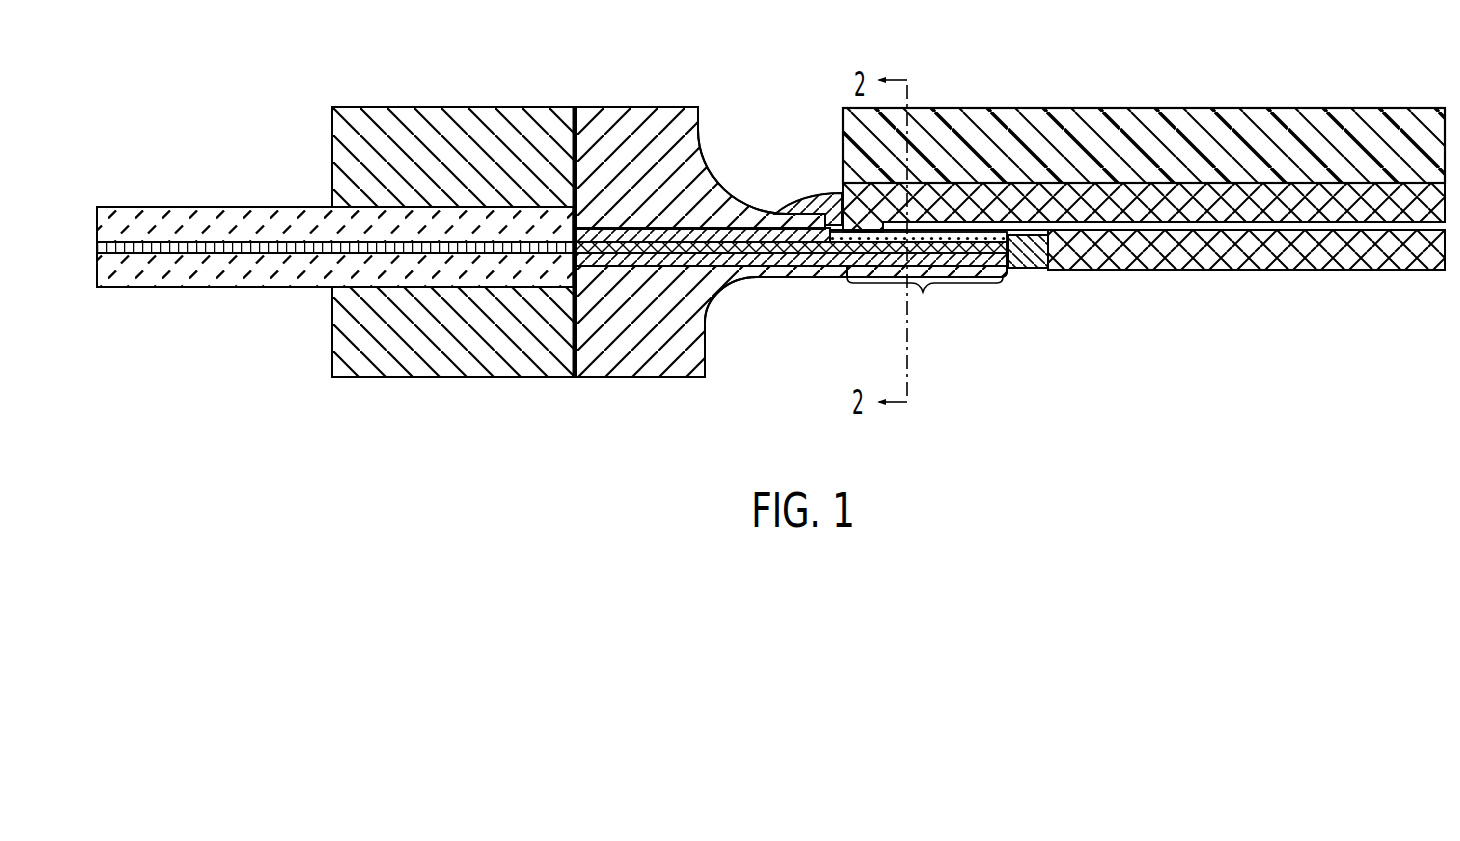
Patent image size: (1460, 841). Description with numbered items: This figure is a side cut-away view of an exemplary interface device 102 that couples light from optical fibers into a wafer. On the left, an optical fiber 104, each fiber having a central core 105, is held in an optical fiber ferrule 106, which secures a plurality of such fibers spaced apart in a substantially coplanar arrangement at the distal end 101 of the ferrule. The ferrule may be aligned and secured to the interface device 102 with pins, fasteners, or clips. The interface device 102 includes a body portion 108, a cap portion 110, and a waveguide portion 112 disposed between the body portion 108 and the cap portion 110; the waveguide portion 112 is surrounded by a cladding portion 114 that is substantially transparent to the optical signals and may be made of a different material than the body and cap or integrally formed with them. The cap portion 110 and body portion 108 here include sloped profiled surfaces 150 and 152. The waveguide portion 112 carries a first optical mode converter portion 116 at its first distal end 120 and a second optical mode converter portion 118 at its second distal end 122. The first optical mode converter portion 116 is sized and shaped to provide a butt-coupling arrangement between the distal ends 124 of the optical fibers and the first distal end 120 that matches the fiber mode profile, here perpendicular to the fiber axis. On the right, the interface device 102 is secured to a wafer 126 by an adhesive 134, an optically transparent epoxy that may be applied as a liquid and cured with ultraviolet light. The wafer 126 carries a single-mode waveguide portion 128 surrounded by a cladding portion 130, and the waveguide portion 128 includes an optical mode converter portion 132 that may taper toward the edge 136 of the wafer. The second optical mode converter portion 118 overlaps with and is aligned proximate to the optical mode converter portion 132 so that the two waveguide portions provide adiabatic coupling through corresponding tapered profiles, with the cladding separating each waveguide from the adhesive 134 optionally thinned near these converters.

The distal end of the optical fiber ferrule 101 is at (574, 107).
The interface device 102 is at (710, 212).
The optical fiber 104 is at (148, 221).
The core 105 is at (232, 242).
The optical fiber ferrule 106 is at (430, 118).
The body portion 108 is at (628, 367).
The cap portion 110 is at (650, 108).
The waveguide portion 112 is at (836, 226).
The cladding portion 114 is at (791, 243).
The first optical mode converter portion 116 is at (648, 222).
The second optical mode converter portion 118 is at (923, 292).
The first distal end 120 is at (583, 274).
The second distal end 122 is at (977, 283).
The distal ends of the optical fibers 124 is at (566, 218).
The wafer 126 is at (1014, 120).
The single-mode waveguide portion 128 is at (1105, 225).
The cladding portion 130 is at (1280, 196).
The optical mode converter portion 132 is at (950, 216).
The adhesive 134 is at (1030, 261).
The edge of the wafer 136 is at (1104, 191).
The sloped profiled surface 150 is at (704, 131).
The sloped profiled surface 152 is at (740, 305).